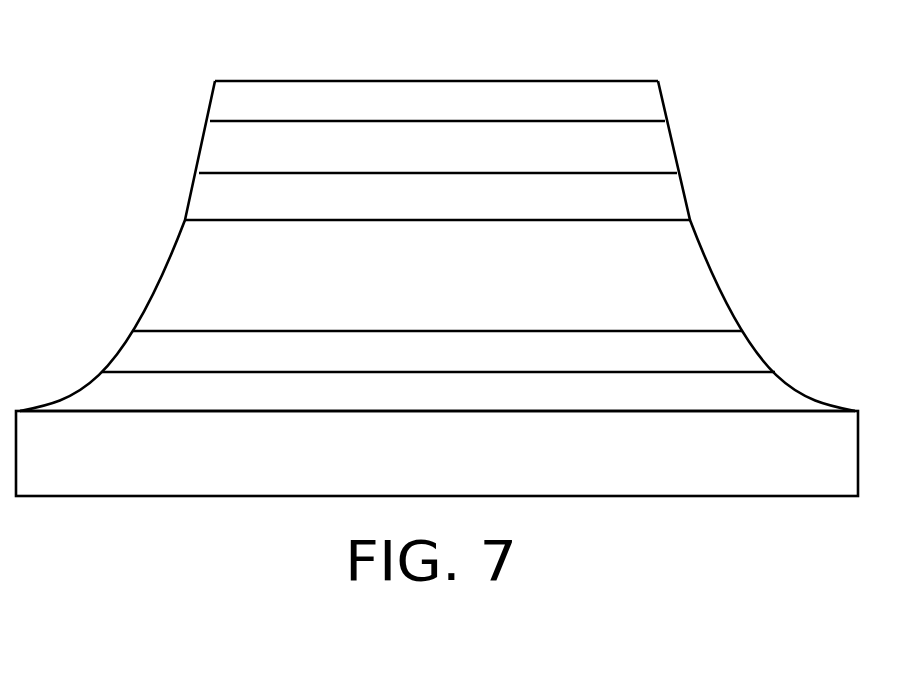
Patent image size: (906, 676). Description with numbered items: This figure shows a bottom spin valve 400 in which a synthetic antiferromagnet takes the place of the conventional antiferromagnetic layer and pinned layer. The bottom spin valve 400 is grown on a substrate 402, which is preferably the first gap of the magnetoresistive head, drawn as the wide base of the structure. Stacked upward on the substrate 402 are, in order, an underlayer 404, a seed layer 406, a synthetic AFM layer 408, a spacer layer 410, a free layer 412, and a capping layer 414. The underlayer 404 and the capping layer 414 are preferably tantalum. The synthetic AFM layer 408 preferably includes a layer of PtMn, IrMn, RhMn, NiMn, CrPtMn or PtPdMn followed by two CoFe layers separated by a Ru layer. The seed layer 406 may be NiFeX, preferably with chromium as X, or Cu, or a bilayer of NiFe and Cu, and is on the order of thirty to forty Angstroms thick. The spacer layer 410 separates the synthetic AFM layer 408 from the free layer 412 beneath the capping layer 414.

The bottom spin valve 400 is at (457, 57).
The substrate 402 is at (152, 498).
The underlayer 404 is at (83, 392).
The seed layer 406 is at (745, 348).
The synthetic AFM layer 408 is at (163, 277).
The spacer layer 410 is at (677, 193).
The free layer 412 is at (210, 147).
The capping layer 414 is at (655, 98).